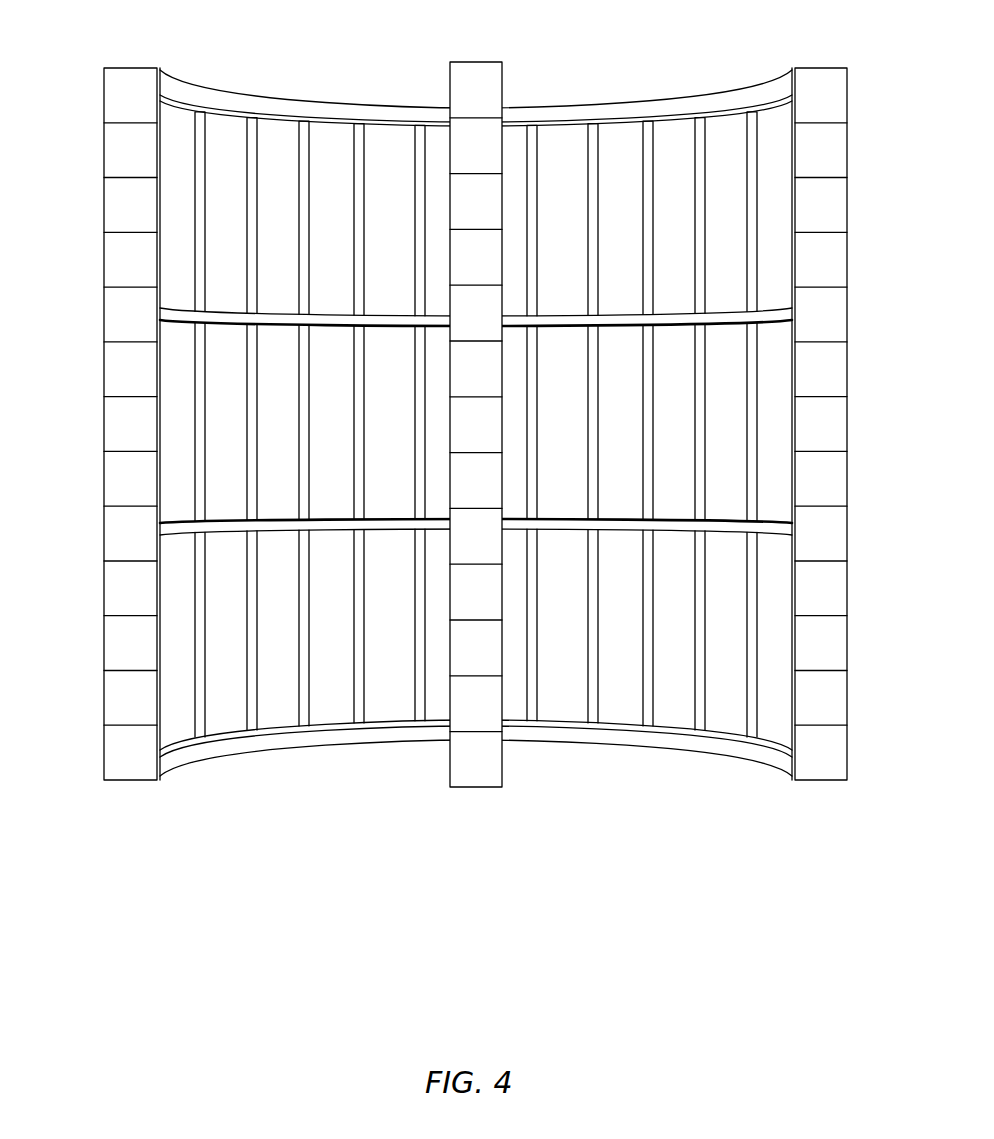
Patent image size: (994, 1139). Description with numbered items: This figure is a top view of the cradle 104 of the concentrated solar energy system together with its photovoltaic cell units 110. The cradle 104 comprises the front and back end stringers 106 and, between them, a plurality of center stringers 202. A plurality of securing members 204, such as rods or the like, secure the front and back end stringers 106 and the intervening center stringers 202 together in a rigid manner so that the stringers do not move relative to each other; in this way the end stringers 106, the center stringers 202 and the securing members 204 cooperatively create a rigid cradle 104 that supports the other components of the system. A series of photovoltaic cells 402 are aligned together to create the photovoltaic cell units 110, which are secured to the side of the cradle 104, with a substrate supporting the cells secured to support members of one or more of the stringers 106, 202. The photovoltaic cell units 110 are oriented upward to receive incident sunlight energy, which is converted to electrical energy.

The cradle 104 is at (688, 782).
The front and back end stringers 106 is at (628, 110).
The photovoltaic cell units 110 is at (132, 48).
The center stringers 202 is at (627, 320).
The securing members 204 is at (338, 703).
The photovoltaic cells 402 is at (120, 467).